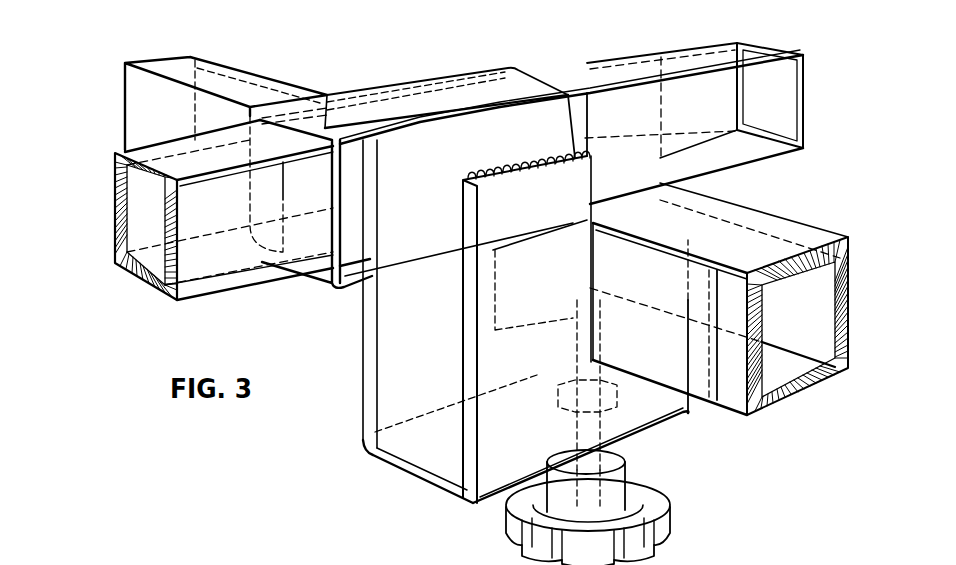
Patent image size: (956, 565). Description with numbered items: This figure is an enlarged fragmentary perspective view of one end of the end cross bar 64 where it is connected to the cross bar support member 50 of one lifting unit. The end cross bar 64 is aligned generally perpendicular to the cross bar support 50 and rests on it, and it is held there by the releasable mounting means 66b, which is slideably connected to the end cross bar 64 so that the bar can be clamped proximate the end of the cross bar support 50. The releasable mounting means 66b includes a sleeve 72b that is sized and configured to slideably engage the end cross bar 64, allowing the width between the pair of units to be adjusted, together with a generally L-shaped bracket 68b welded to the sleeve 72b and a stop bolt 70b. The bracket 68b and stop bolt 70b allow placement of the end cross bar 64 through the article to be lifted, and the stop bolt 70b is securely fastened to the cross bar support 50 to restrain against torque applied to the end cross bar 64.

The end cross bar 64 is at (605, 74).
The sleeve 72b is at (426, 87).
The releasable mounting means 66b is at (348, 426).
The bracket 68b is at (440, 462).
The stop bolt 70b is at (663, 500).
The cross bar support member 50 is at (750, 217).